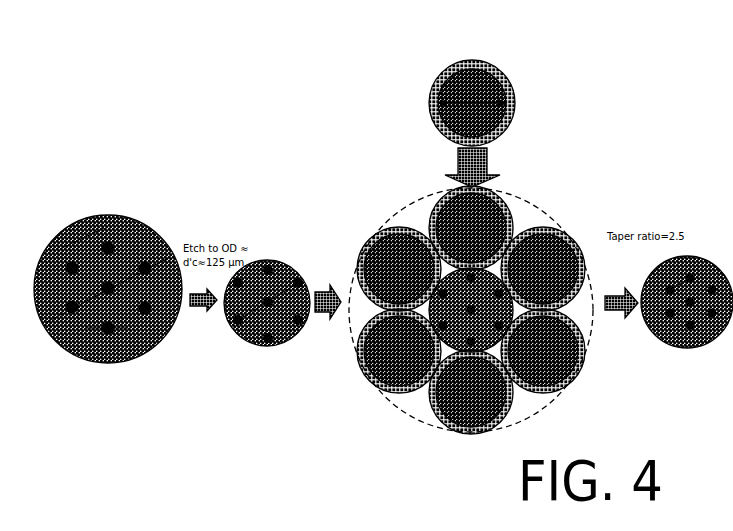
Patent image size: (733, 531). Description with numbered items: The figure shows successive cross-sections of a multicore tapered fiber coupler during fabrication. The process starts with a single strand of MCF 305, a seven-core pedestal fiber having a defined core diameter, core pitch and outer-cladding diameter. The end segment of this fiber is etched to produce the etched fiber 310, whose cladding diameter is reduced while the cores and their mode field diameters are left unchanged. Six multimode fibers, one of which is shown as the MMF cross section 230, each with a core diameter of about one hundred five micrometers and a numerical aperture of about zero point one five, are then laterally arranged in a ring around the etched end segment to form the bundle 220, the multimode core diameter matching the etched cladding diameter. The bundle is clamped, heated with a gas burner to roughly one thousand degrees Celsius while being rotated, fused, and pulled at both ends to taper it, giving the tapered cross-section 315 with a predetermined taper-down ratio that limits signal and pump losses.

The MCF 305 is at (109, 216).
The etched fiber 310 is at (270, 259).
The MMF cross section 230 is at (489, 65).
The bundle cross section 220 is at (508, 194).
The tapered cross section 315 is at (680, 349).